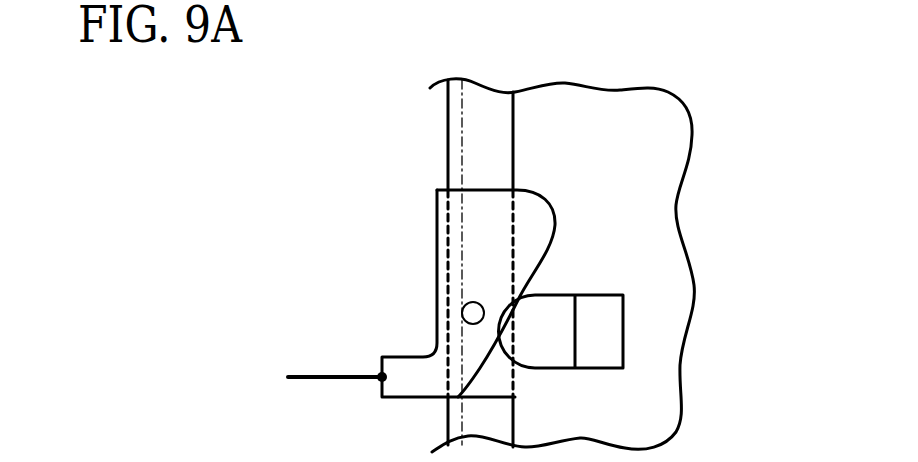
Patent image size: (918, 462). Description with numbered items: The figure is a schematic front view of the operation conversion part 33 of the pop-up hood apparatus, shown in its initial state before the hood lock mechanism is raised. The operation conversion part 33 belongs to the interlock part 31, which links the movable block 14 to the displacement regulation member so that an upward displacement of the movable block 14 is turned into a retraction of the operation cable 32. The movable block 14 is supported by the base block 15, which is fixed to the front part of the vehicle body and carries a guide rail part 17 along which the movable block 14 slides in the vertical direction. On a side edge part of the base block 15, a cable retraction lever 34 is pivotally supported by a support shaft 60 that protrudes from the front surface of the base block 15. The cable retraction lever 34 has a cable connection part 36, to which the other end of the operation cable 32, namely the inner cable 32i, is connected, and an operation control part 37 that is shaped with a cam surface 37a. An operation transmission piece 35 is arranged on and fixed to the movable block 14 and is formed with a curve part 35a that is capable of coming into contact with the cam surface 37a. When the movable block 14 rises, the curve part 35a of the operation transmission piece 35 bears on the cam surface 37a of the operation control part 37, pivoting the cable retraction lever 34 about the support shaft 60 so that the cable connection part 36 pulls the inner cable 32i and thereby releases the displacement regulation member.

The movable block 14 is at (655, 107).
The base block 15 is at (488, 86).
The guide rail part 17 is at (473, 88).
The interlock part 31 is at (431, 279).
The operation cable 32 is at (346, 324).
The inner cable 32i is at (318, 372).
The operation conversion part 33 is at (427, 252).
The cable retraction lever 34 is at (436, 209).
The operation transmission piece 35 is at (563, 327).
The curve part 35a is at (505, 338).
The cable connection part 36 is at (402, 391).
The operation control part 37 is at (532, 217).
The cam surface 37a is at (548, 260).
The support shaft 60 is at (467, 304).